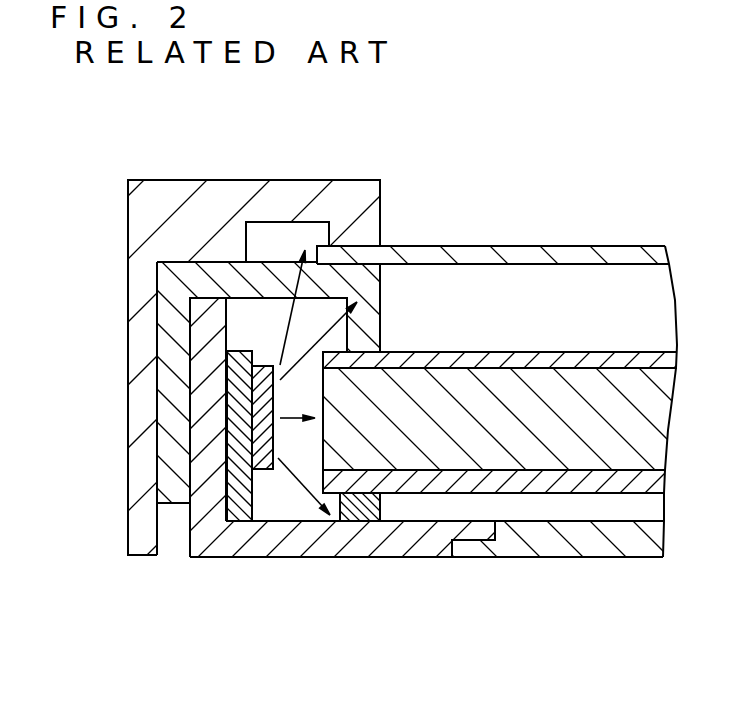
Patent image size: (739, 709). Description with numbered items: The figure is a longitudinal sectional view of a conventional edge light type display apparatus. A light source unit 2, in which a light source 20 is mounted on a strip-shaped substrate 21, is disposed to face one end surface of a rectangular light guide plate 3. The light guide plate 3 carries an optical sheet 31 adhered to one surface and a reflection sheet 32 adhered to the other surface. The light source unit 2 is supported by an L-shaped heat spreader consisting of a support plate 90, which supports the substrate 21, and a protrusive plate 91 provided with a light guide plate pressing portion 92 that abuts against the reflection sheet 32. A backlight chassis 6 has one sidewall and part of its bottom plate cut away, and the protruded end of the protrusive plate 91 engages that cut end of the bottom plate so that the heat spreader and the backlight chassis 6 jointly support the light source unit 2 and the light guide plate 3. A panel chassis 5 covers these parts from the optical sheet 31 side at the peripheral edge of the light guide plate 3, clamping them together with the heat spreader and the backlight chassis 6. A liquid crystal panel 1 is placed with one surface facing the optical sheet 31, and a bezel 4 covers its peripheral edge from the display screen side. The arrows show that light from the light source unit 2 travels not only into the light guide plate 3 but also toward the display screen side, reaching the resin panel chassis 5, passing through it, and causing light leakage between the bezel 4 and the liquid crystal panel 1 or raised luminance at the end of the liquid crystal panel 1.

The liquid crystal panel 1 is at (515, 247).
The light source unit 2 is at (233, 516).
The light guide plate 3 is at (537, 463).
The bezel 4 is at (182, 192).
The panel chassis 5 is at (155, 350).
The backlight chassis 6 is at (607, 545).
The light source 20 is at (267, 458).
The substrate 21 is at (238, 521).
The optical sheet 31 is at (500, 358).
The reflection sheet 32 is at (498, 490).
The support plate 90 is at (198, 535).
The protrusive plate 91 is at (353, 548).
The light guide plate pressing portion 92 is at (387, 527).